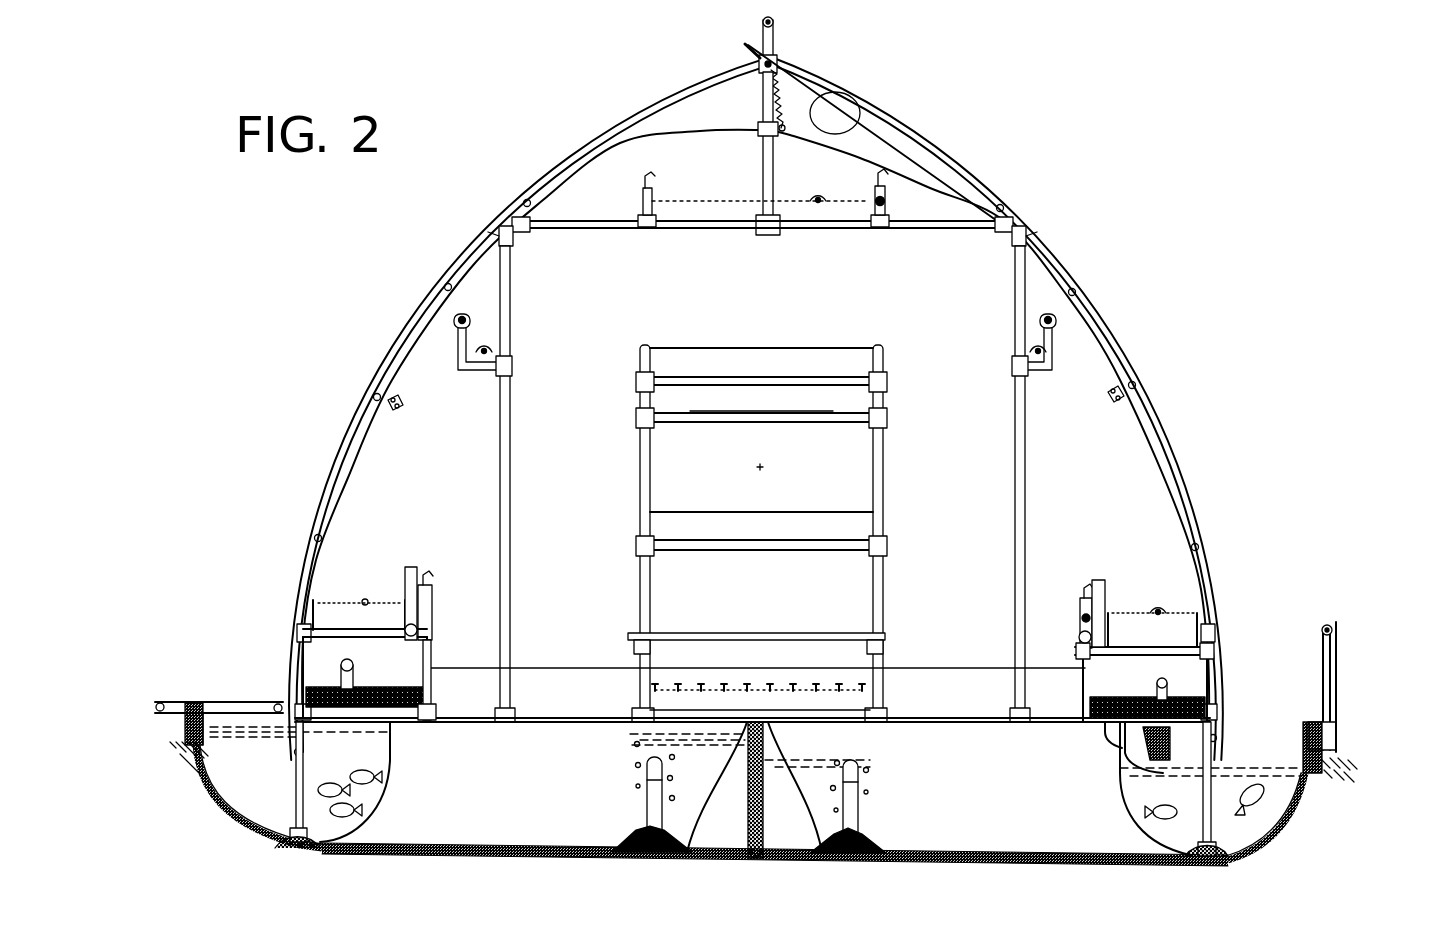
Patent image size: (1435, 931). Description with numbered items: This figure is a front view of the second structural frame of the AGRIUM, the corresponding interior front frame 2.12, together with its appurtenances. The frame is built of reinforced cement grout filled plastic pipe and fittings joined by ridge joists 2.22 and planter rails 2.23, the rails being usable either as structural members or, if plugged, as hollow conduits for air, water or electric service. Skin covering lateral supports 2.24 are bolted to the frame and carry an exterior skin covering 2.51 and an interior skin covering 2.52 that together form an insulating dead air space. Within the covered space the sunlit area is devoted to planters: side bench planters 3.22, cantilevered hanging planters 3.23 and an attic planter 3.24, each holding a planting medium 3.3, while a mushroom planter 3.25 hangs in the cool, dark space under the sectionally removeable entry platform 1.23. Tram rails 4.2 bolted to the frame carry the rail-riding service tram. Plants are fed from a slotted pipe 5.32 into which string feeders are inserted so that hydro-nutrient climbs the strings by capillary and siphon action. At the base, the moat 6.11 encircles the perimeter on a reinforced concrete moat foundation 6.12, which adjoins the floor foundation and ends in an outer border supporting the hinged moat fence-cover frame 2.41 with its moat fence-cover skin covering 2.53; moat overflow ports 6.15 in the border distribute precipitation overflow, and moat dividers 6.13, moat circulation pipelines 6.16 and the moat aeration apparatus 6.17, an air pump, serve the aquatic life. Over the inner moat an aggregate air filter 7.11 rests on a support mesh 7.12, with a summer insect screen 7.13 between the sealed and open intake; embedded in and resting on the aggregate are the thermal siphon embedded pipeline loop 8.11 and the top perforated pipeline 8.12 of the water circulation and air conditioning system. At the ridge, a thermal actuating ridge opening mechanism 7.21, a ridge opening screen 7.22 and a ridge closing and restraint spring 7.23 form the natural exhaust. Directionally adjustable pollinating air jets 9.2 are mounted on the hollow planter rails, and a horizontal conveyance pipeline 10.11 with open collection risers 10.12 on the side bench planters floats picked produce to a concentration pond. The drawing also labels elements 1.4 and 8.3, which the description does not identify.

The sectionally removeable entry platform 1.23 is at (776, 637).
The clip 1.4 is at (1110, 400).
The corresponding interior front frame 2.12 is at (1094, 338).
The ridge joists 2.22 is at (780, 63).
The planter rails 2.23 is at (886, 203).
The skin covering lateral supports 2.24 is at (1136, 387).
The hinged moat fence-cover frames 2.41 is at (1320, 651).
The exterior skin covering 2.51 is at (922, 132).
The interior skin covering 2.52 is at (944, 168).
The moat fence-cover skin covering 2.53 is at (1338, 664).
The side bench planters 3.22 is at (1180, 612).
The cantilevered hanging planters 3.23 is at (1016, 338).
The attic planter 3.24 is at (654, 194).
The mushroom planter 3.25 is at (650, 684).
The planting medium 3.3 is at (340, 598).
The tram rails 4.2 is at (1006, 650).
The slotted pipe 5.32 is at (826, 198).
The moat 6.11 is at (378, 803).
The moat foundation 6.12 is at (470, 846).
The moat dividers 6.13 is at (772, 745).
The moat overflow ports 6.15 is at (183, 727).
The moat circulation pipelines 6.16 is at (862, 785).
The moat aeration apparatus 6.17 is at (846, 780).
The aggregate air filter 7.11 is at (1108, 745).
The aggregate air filter support mesh 7.12 is at (1125, 762).
The summer insect screen 7.13 is at (1165, 768).
The thermal actuating ridge opening mechanism 7.21 is at (838, 115).
The ridge opening screen 7.22 is at (746, 52).
The ridge closing and restraint spring 7.23 is at (768, 112).
The thermal siphon embedded pipeline loop 8.11 is at (1200, 705).
The thermal siphon top perforated pipeline 8.12 is at (1160, 683).
The vent cap 8.3 is at (778, 22).
The directionally adjustable pollinating air jets 9.2 is at (878, 176).
The horizontal conveyance pipeline 10.11 is at (1082, 640).
The open collection risers 10.12 is at (1098, 580).